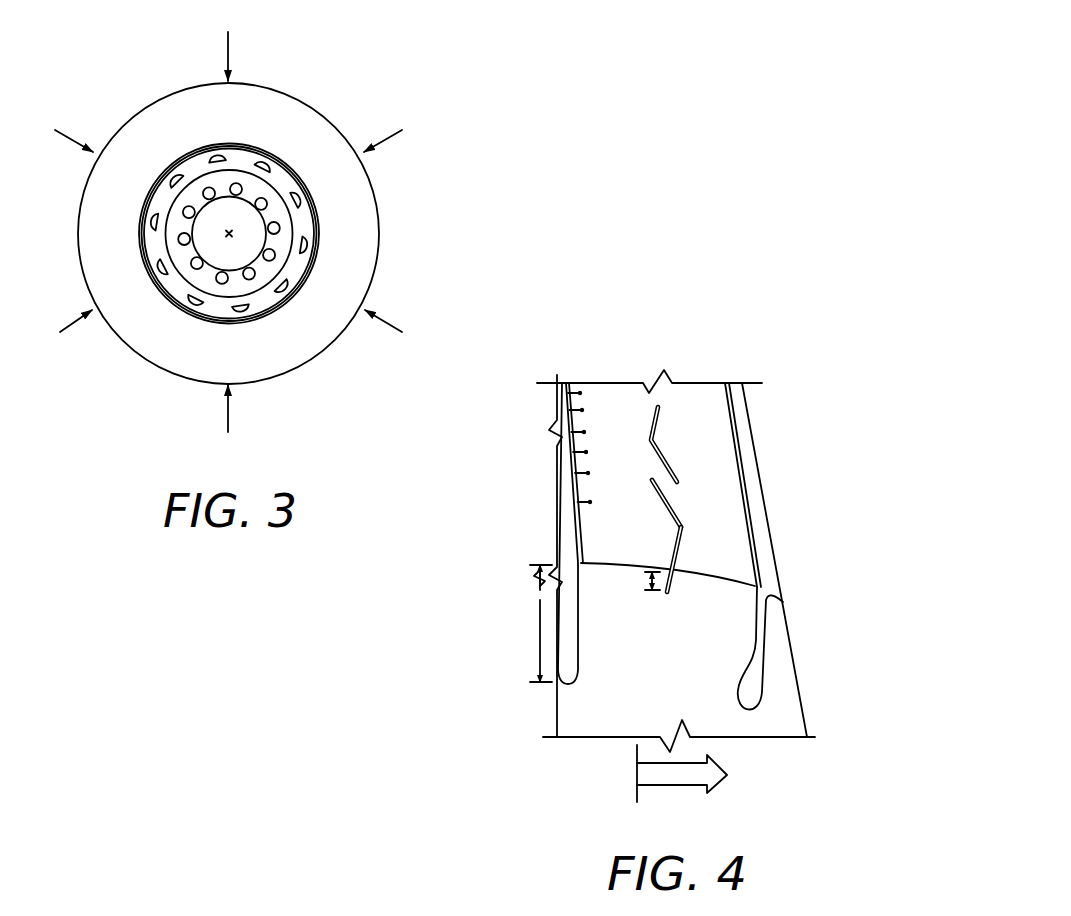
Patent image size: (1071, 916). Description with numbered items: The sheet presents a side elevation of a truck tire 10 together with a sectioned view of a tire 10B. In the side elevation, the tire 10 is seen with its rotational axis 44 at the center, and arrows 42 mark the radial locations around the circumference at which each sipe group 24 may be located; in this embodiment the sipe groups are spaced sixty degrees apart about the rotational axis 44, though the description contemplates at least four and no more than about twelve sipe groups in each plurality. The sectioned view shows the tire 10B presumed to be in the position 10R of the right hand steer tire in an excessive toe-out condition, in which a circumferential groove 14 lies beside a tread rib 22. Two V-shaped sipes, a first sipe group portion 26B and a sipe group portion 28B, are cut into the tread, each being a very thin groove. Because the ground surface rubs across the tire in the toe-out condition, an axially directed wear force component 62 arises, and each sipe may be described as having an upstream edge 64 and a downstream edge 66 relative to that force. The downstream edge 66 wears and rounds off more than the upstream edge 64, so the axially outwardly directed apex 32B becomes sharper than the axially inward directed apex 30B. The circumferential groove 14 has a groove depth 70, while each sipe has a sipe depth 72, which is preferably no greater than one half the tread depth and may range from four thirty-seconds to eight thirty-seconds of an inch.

In FIG. 3, the tire 10 is at (391, 66).
In FIG. 3, the sipe group 24 is at (232, 82).
In FIG. 3, the arrows 42 is at (227, 57).
In FIG. 3, the rotational axis 44 is at (231, 233).
In FIG. 4, the circumferential groove 14 is at (563, 381).
In FIG. 4, the tread rib 22 is at (643, 390).
In FIG. 4, the tire 10B is at (821, 508).
In FIG. 4, the right hand steer tire position 10R is at (786, 372).
In FIG. 4, the first sipe group portion 26B is at (663, 457).
In FIG. 4, the sipe group portion 28B is at (670, 503).
In FIG. 4, the axially outwardly directed apex 32B is at (678, 530).
In FIG. 4, the axially inward directed apex 30B is at (655, 441).
In FIG. 4, the upstream edge 64 is at (663, 545).
In FIG. 4, the downstream edge 66 is at (683, 545).
In FIG. 4, the groove depth 70 is at (540, 603).
In FIG. 4, the sipe depth 72 is at (647, 582).
In FIG. 4, the axially directed wear force component 62 is at (667, 778).